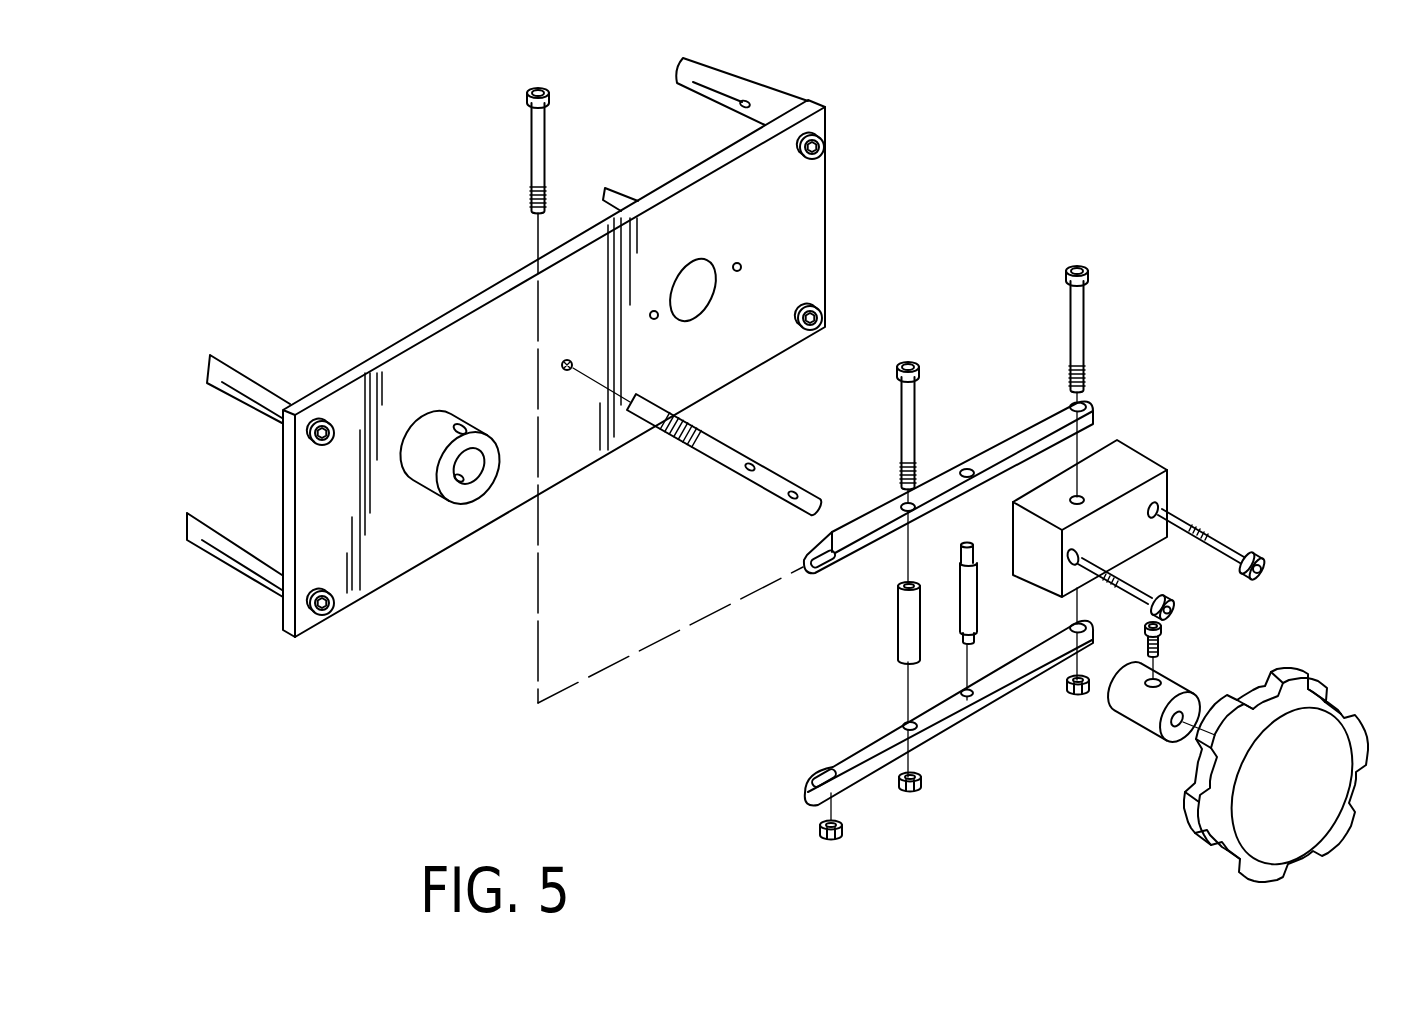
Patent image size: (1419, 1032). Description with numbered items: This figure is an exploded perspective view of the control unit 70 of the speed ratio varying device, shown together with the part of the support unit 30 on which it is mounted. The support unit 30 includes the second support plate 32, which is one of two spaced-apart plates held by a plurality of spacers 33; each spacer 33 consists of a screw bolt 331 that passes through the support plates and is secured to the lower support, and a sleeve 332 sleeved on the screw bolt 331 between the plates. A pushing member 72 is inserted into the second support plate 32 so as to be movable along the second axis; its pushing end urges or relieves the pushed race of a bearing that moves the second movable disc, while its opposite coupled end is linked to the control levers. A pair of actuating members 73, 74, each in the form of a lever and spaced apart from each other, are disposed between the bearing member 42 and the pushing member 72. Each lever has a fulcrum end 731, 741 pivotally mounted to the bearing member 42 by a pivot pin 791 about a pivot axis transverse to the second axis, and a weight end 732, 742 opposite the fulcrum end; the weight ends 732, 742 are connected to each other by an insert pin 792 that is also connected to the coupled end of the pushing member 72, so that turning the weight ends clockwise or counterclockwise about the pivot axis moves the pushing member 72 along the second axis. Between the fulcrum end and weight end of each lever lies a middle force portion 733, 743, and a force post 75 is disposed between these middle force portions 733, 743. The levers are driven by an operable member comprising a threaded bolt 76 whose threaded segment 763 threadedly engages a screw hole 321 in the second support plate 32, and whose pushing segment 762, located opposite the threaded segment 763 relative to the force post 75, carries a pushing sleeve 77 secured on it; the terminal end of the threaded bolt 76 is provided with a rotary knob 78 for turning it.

The support unit 30 is at (822, 175).
The second support plate 32 is at (813, 234).
The screw hole 321 is at (575, 364).
The spacers 33 is at (688, 84).
The screw bolt 331 is at (806, 132).
The sleeve 332 is at (740, 101).
The bearing member 42 is at (1129, 462).
The control unit 70 is at (1328, 672).
The pushing member 72 is at (420, 478).
The actuating member 73 is at (983, 452).
The fulcrum end 731 is at (1063, 418).
The weight end 732 is at (797, 580).
The middle force portion 733 is at (937, 487).
The actuating member 74 is at (938, 732).
The fulcrum end 741 is at (1033, 667).
The weight end 742 is at (806, 790).
The middle force portion 743 is at (943, 712).
The force post 75 is at (978, 620).
The threaded bolt 76 is at (742, 454).
The pushing segment 762 is at (762, 489).
The threaded segment 763 is at (671, 440).
The pushing sleeve 77 is at (1134, 704).
The rotary knob 78 is at (1272, 829).
The pivot pin 791 is at (1088, 315).
The insert pin 792 is at (530, 150).